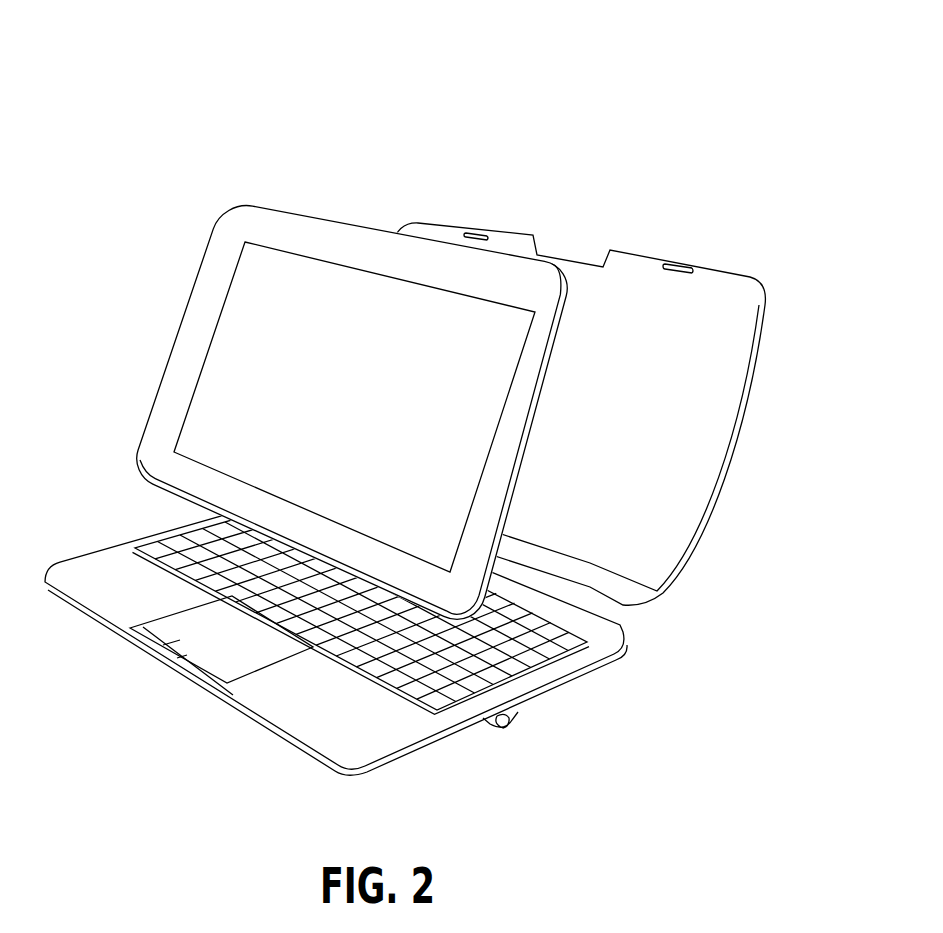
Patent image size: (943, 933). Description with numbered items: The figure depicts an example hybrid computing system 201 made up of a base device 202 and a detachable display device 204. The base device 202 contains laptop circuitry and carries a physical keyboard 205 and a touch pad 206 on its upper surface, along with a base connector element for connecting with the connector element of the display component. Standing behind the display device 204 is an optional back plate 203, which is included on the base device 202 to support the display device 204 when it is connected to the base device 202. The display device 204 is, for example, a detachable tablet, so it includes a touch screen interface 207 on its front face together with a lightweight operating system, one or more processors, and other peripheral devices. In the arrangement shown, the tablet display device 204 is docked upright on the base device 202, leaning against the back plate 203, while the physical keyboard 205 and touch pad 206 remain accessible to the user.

The hybrid computing system 201 is at (215, 107).
The base device 202 is at (334, 627).
The back plate 203 is at (720, 290).
The display device 204 is at (319, 410).
The physical keyboard 205 is at (473, 658).
The touch pad 206 is at (187, 628).
The touch screen interface 207 is at (230, 342).